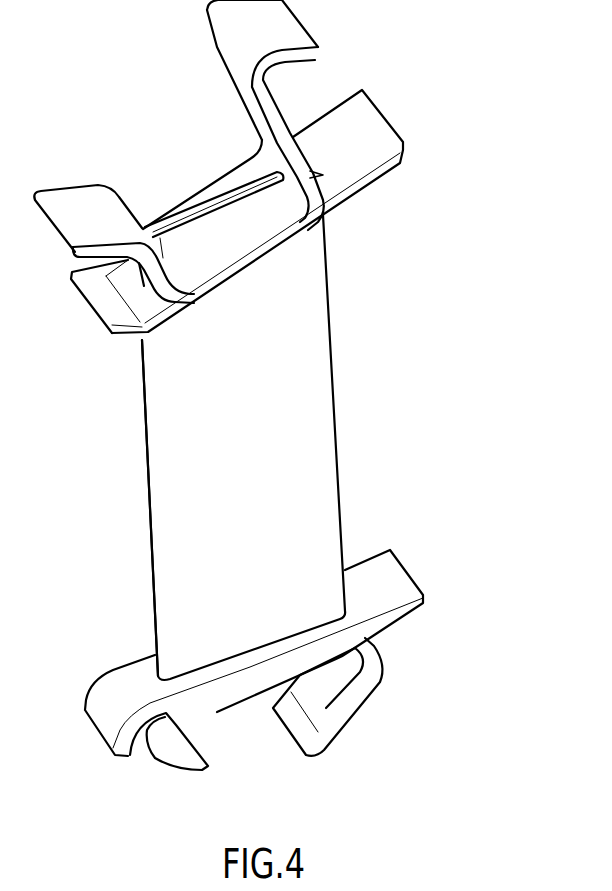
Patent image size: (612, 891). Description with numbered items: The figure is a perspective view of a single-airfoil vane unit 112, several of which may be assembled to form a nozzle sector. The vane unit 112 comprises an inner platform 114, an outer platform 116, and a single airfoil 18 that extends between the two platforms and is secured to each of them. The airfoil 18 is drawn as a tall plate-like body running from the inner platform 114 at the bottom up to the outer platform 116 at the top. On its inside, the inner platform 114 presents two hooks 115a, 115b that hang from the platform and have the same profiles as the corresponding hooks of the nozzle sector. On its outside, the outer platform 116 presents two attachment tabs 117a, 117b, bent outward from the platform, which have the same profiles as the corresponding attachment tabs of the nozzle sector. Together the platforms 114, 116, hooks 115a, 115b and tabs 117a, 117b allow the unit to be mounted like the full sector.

The airfoil 18 is at (303, 407).
The single-airfoil vane unit 112 is at (138, 464).
The inner platform 114 is at (247, 653).
The hook 115a is at (170, 768).
The hook 115b is at (360, 700).
The outer platform 116 is at (231, 268).
The attachment tab 117a is at (80, 200).
The attachment tab 117b is at (227, 47).